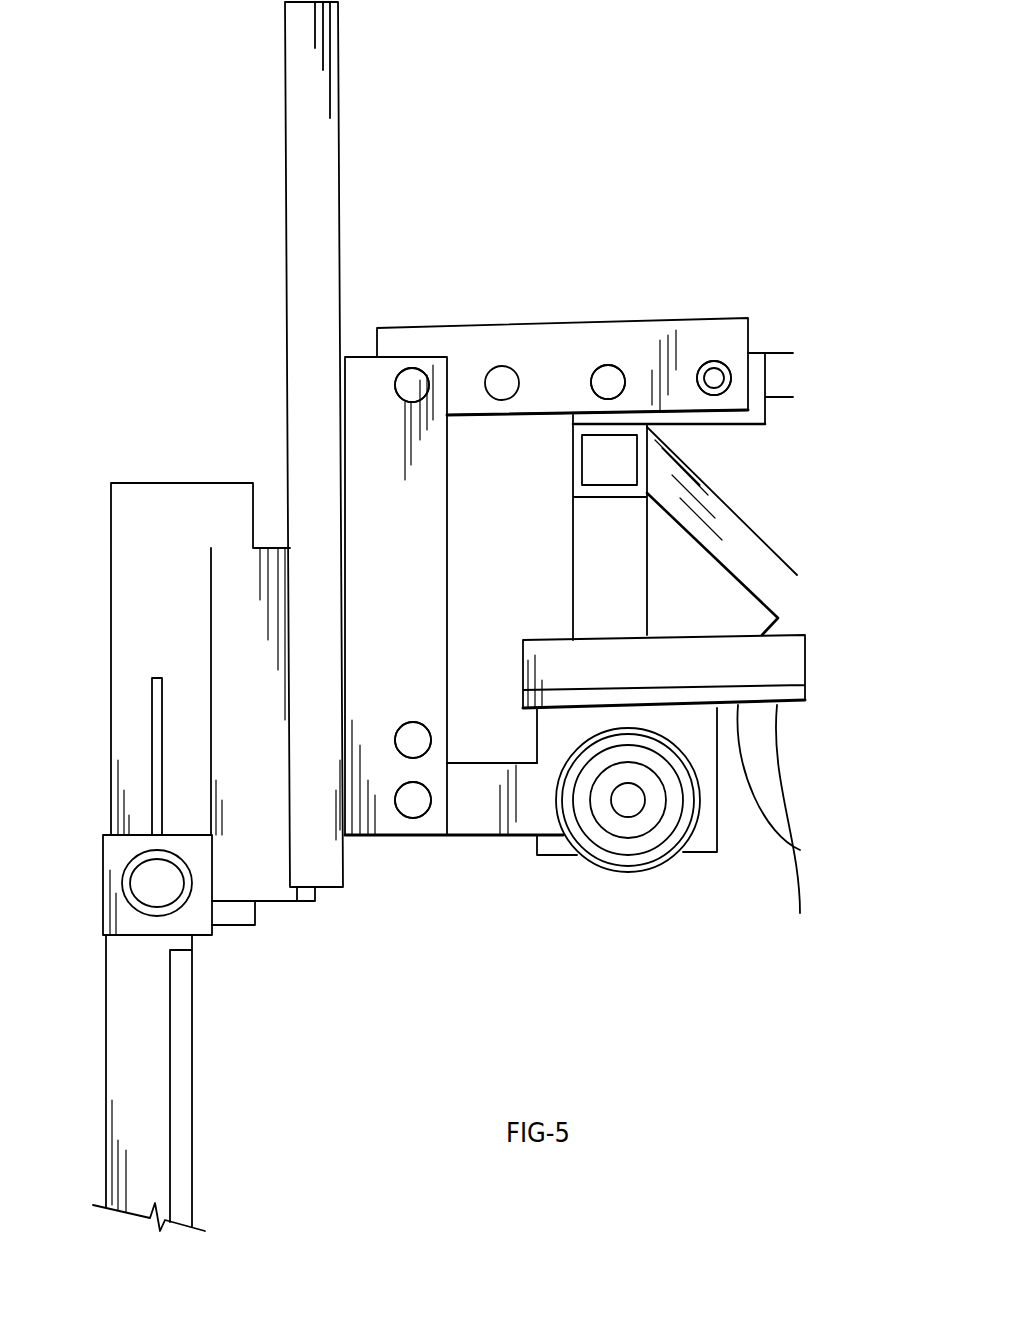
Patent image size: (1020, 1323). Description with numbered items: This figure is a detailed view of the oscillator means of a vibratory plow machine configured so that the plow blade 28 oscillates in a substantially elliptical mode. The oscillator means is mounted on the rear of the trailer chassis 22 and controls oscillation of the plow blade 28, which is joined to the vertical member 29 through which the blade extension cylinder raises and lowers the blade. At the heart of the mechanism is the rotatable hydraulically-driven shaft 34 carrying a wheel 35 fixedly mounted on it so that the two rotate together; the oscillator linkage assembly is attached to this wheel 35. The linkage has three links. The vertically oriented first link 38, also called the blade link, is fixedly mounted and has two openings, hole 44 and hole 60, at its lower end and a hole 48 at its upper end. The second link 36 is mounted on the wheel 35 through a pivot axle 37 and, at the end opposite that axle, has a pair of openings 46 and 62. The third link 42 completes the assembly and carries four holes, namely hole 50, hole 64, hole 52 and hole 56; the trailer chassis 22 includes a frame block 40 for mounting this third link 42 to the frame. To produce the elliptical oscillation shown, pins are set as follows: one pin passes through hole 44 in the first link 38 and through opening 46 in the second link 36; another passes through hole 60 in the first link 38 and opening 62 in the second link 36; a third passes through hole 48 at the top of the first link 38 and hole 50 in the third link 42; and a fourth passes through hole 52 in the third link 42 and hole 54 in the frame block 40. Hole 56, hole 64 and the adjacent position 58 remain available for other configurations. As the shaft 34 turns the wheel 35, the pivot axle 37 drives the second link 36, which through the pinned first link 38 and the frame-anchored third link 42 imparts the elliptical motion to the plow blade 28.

The trailer chassis 22 is at (752, 528).
The plow blade 28 is at (111, 574).
The vertical member 29 is at (328, 104).
The shaft 34 is at (628, 805).
The wheel 35 is at (642, 832).
The second link 36 is at (479, 822).
The pivot axle 37 is at (672, 860).
The first link 38 is at (465, 521).
The frame block 40 is at (767, 411).
The third link 42 is at (553, 340).
The hole 44 is at (412, 812).
The opening 46 is at (413, 800).
The hole 48 is at (415, 370).
The hole 50 is at (412, 385).
The hole 52 is at (611, 366).
The hole 54 is at (608, 382).
The hole 56 is at (718, 362).
The hole 58 is at (714, 378).
The hole 60 is at (420, 730).
The opening 62 is at (413, 740).
The hole 64 is at (503, 366).